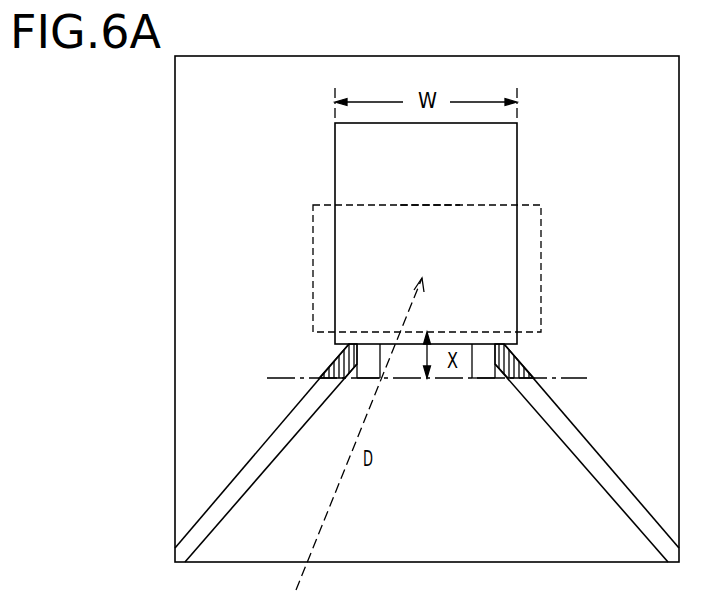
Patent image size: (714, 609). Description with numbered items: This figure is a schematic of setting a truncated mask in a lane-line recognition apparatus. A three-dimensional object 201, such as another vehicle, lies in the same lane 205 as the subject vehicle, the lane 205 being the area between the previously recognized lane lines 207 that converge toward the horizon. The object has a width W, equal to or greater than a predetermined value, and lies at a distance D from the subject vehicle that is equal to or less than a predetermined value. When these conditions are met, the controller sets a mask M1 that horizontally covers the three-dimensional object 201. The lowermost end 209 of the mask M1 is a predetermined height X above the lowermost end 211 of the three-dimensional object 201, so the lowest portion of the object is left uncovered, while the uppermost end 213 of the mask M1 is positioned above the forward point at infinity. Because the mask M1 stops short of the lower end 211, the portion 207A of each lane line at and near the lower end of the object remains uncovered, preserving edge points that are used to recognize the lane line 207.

The three-dimensional object 201 is at (518, 167).
The lane 205 is at (482, 447).
The lane lines 207 is at (250, 482).
The portion of the lane line 207A is at (334, 368).
The lowermost end of the mask 209 is at (358, 334).
The lowermost end of the three-dimensional object 211 is at (565, 378).
The uppermost end of the mask 213 is at (428, 205).
The mask M1 is at (542, 238).